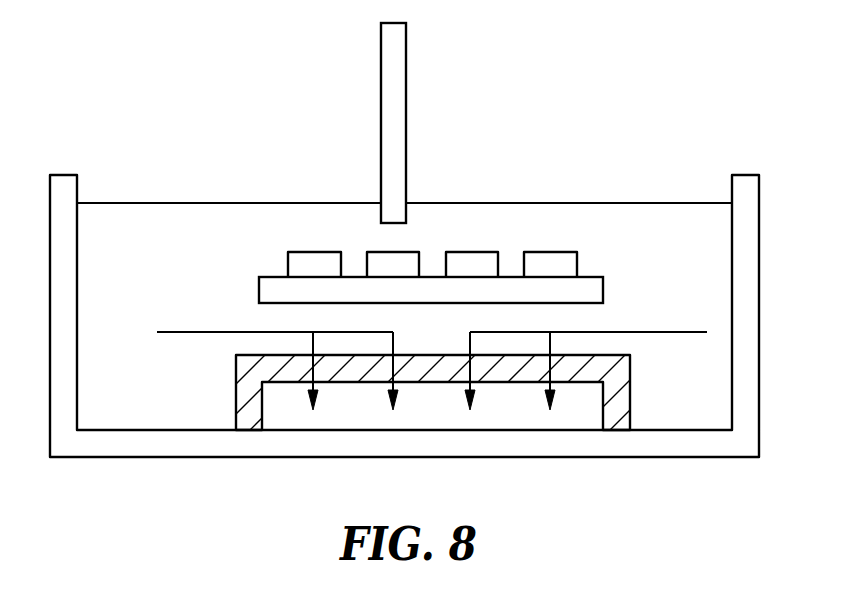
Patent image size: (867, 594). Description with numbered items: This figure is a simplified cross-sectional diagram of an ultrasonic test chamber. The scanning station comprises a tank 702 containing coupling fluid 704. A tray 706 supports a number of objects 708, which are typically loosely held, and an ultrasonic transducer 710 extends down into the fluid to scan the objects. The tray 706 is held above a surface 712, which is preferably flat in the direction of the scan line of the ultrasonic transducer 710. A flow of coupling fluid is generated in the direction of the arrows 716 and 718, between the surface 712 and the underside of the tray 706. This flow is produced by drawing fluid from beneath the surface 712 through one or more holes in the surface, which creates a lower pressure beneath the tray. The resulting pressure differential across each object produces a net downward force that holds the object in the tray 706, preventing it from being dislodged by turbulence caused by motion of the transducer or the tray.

The tank 702 is at (759, 223).
The coupling fluid 704 is at (120, 210).
The tray 706 is at (259, 292).
The objects 708 is at (552, 252).
The ultrasonic transducer 710 is at (406, 104).
The surface 712 is at (237, 395).
The arrows 716 is at (187, 332).
The arrows 718 is at (646, 332).